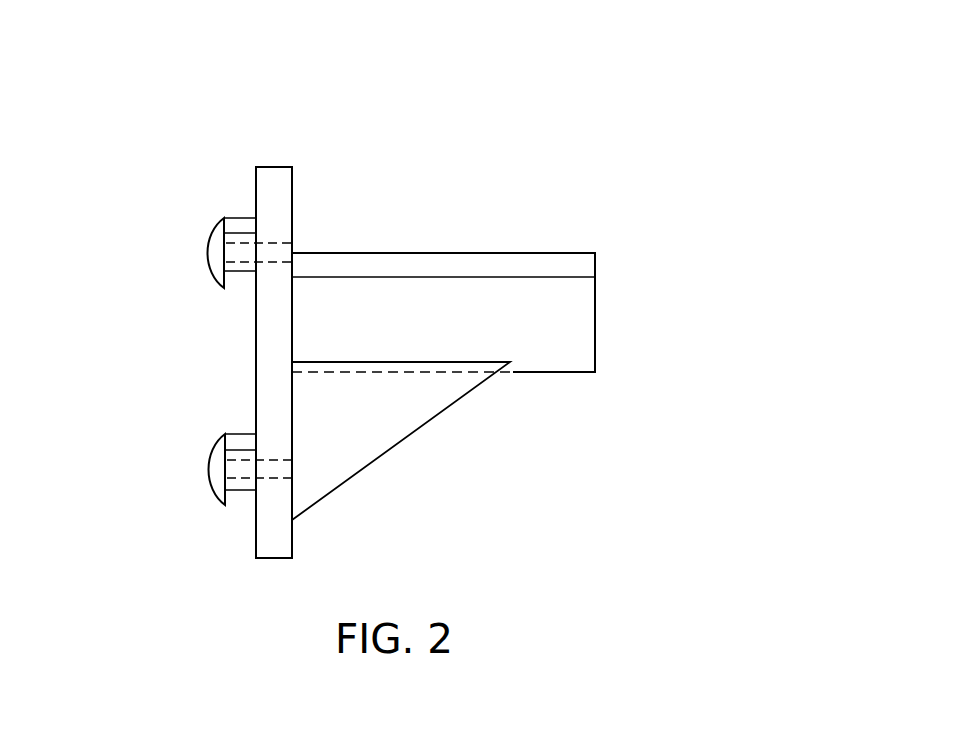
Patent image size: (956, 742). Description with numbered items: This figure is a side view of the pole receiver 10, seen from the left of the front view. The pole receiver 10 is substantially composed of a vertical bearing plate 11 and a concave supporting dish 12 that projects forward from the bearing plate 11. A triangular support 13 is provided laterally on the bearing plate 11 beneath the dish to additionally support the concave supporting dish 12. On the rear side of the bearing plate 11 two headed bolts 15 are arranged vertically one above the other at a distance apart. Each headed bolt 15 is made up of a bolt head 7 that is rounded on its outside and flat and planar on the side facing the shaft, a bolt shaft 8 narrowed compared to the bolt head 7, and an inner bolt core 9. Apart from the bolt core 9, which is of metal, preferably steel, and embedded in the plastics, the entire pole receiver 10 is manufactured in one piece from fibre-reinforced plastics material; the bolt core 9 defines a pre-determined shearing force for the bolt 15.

The bolt head 7 is at (215, 485).
The bolt shaft 8 is at (238, 485).
The bolt core 9 is at (275, 257).
The pole receiver 10 is at (582, 131).
The bearing plate 11 is at (280, 195).
The concave supporting dish 12 is at (588, 313).
The triangular supports 13 is at (395, 433).
The headed bolts 15 is at (207, 252).